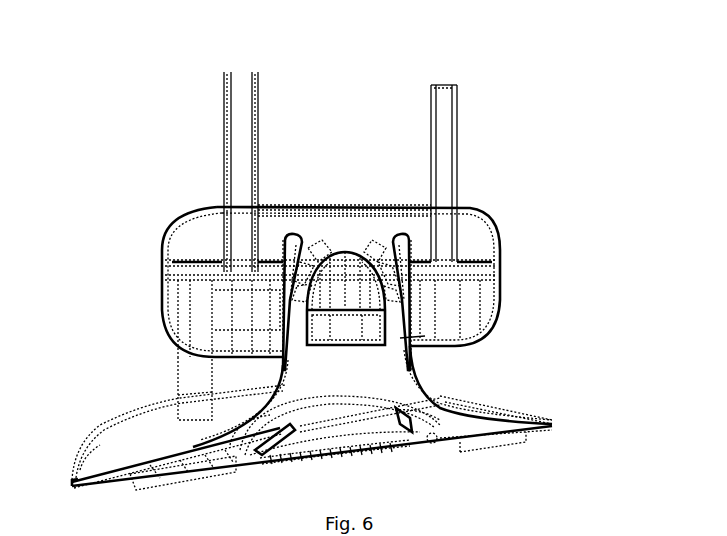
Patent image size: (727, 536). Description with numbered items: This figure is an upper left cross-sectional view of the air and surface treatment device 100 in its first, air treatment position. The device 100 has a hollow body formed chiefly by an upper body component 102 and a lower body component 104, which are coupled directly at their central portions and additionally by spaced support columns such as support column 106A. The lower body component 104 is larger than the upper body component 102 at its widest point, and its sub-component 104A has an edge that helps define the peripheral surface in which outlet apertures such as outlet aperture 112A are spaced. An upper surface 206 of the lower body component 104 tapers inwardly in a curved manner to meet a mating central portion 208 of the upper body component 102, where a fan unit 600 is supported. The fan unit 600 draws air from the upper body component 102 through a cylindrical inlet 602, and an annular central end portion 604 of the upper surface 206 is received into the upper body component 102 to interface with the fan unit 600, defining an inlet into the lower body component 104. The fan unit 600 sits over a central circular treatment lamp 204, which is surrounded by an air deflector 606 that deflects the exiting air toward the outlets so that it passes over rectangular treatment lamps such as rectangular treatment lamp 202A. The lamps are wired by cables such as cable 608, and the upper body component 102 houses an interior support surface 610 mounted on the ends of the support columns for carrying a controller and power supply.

The air and surface treatment device 100 is at (150, 153).
The upper body component 102 is at (512, 207).
The lower body component 104 is at (558, 403).
The sub-component of lower body component 104A is at (151, 457).
The support column 106A is at (182, 372).
The outlet aperture 112A is at (66, 491).
The rectangular treatment lamp 202A is at (165, 505).
The central circular treatment lamp 204 is at (366, 474).
The upper surface of lower body component 206 is at (414, 362).
The mating central portion 208 is at (414, 347).
The fan unit 600 is at (345, 256).
The cylindrical inlet 602 is at (345, 245).
The central end portion 604 is at (273, 332).
The air deflector 606 is at (356, 406).
The cable 608 is at (436, 442).
The interior support surface 610 is at (476, 222).